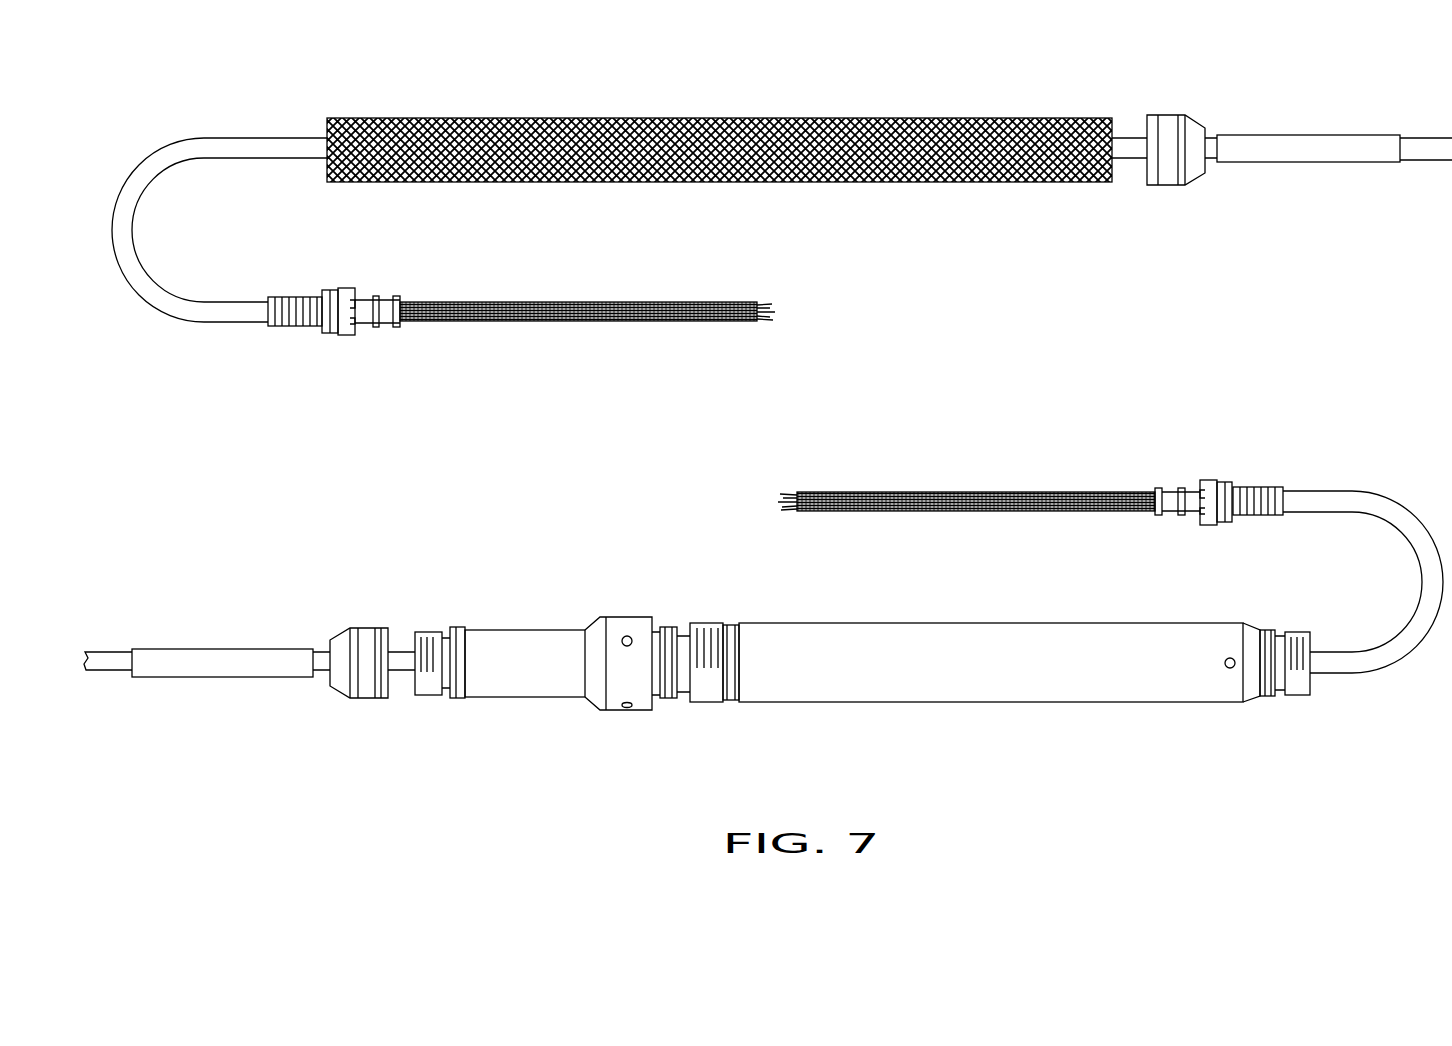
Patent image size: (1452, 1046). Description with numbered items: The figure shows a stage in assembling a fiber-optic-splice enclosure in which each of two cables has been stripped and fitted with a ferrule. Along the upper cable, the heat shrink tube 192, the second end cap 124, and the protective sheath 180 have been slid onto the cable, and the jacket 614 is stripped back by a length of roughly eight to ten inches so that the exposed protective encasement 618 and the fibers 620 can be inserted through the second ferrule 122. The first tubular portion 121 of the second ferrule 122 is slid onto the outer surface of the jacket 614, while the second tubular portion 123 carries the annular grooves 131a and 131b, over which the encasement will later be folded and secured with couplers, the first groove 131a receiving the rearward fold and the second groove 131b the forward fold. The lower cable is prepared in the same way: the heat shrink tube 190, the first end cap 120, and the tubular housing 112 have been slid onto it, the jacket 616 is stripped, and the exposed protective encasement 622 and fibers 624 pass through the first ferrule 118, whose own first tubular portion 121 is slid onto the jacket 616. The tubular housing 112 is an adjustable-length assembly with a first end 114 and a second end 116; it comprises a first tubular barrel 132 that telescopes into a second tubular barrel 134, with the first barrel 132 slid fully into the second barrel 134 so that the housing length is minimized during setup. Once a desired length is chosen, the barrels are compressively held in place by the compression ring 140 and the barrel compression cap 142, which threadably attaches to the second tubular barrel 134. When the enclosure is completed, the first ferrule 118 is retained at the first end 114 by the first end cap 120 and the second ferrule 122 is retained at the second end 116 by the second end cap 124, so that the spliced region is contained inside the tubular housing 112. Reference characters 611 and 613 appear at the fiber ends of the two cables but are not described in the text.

The tubular housing 112 is at (420, 608).
The first end 114 is at (424, 705).
The second end 116 is at (1300, 710).
The first ferrule 118 is at (1205, 470).
The first end cap 120 is at (365, 682).
The first tubular portion 121 is at (322, 275).
The second ferrule 122 is at (343, 343).
The second tubular portion 123 is at (400, 276).
The second end cap 124 is at (1170, 127).
The first annular groove 131a is at (368, 340).
The second annular groove 131b is at (388, 340).
The first tubular barrel 132 is at (533, 683).
The second tubular barrel 134 is at (995, 685).
The compression ring 140 is at (667, 700).
The barrel compression cap 142 is at (613, 703).
The protective sheath 180 is at (440, 118).
The heat shrink tube 190 is at (208, 660).
The heat shrink tube 192 is at (1288, 152).
The wire leads 611 is at (765, 302).
The wire leads 613 is at (790, 512).
The cable jacket 614 is at (233, 322).
The cable jacket 616 is at (1318, 498).
The protective encasement 618 is at (660, 322).
The fibers 620 is at (762, 295).
The protective encasement 622 is at (988, 493).
The fibers 624 is at (787, 478).